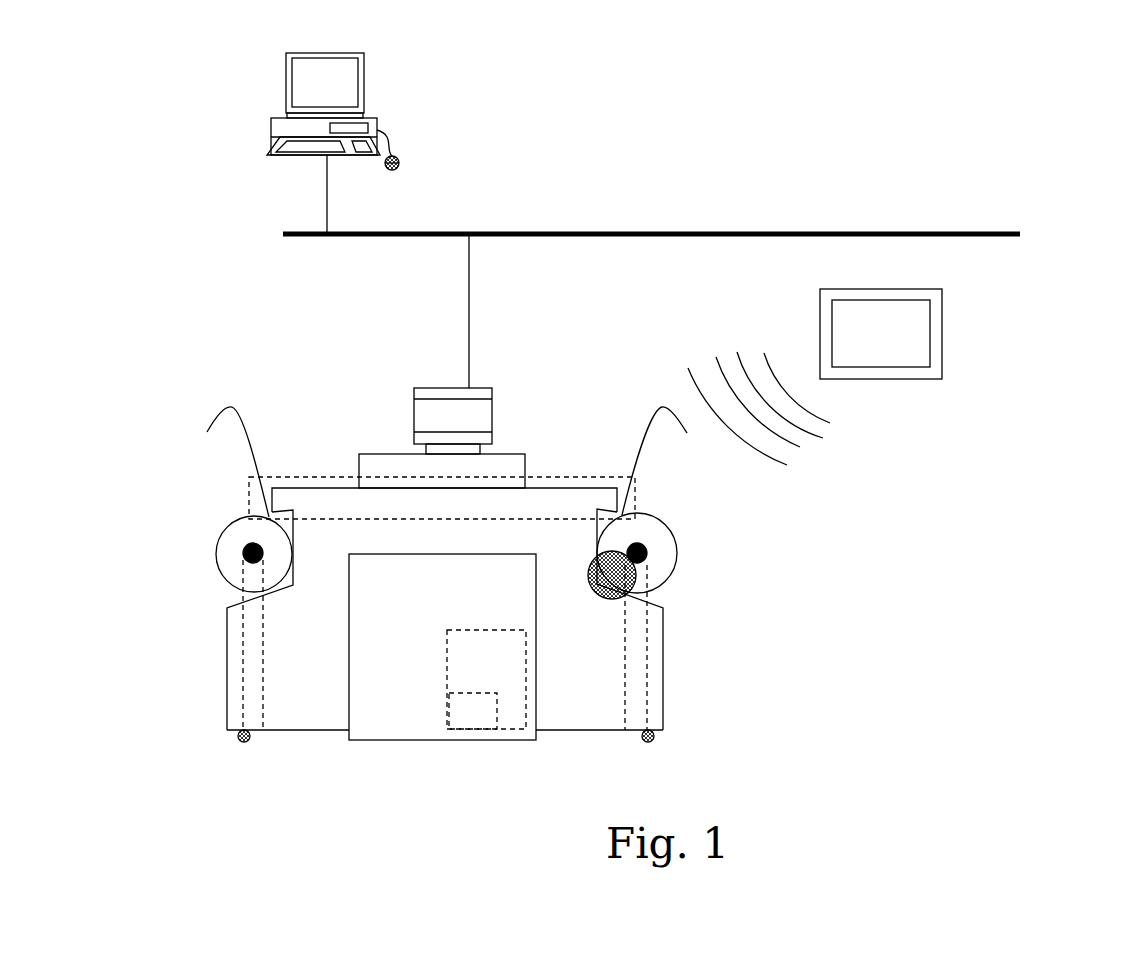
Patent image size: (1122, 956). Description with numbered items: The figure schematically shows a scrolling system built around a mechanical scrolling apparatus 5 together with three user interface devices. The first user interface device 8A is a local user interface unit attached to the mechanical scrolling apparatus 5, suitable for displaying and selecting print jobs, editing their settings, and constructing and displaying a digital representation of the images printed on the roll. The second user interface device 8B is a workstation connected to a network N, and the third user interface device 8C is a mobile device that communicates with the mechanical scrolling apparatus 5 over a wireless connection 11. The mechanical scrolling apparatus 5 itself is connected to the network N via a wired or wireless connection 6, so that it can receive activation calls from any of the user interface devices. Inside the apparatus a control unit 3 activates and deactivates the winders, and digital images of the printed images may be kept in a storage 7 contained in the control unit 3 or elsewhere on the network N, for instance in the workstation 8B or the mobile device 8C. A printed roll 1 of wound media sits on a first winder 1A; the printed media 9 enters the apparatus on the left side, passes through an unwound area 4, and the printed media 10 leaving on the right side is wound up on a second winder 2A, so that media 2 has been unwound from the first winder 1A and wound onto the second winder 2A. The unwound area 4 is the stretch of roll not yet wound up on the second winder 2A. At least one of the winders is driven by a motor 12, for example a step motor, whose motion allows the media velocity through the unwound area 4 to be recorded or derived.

The printed roll 1 is at (231, 576).
The first winder 1A is at (250, 548).
The media wound on second winder 2 is at (661, 576).
The second winder 2A is at (641, 547).
The control unit 3 is at (458, 654).
The unwound area 4 is at (547, 477).
The mechanical scrolling apparatus 5 is at (772, 652).
The wired or wireless connection 6 is at (469, 345).
The storage 7 is at (459, 709).
The first user interface device 8A is at (526, 412).
The second user interface device 8B is at (380, 122).
The third user interface device 8C is at (975, 345).
The printed media entering the apparatus 9 is at (230, 462).
The printed media leaving the apparatus 10 is at (661, 461).
The wireless connection 11 is at (830, 457).
The motor 12 is at (605, 592).
The network N is at (1013, 237).